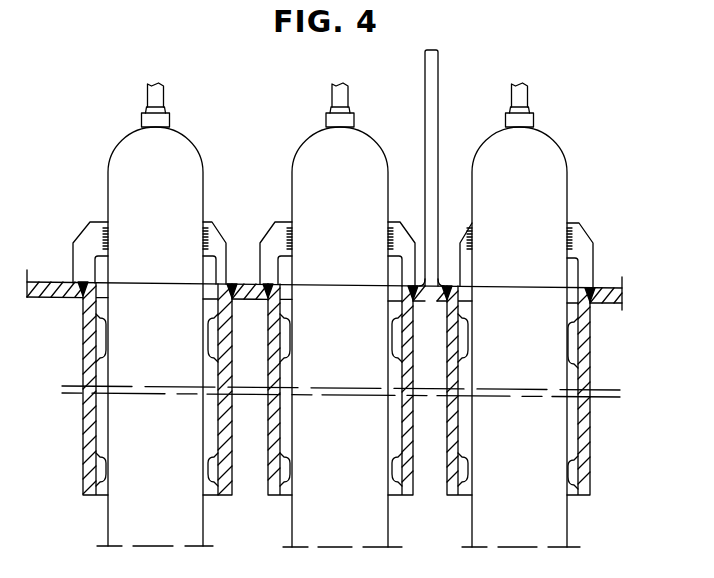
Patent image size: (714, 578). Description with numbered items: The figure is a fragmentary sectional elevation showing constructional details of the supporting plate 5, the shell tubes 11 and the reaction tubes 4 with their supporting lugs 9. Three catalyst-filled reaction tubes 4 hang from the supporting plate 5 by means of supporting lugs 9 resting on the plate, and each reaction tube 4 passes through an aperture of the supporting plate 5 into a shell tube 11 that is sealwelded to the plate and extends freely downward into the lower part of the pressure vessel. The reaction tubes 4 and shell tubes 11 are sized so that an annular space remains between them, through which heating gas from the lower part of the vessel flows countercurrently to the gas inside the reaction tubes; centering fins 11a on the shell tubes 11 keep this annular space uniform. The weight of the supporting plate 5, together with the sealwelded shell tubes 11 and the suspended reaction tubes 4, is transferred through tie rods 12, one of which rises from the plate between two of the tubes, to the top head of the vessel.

The reaction tubes 4 is at (122, 528).
The supporting plate 5 is at (59, 290).
The supporting lugs 9 is at (580, 245).
The shell tubes 11 is at (87, 474).
The centering fins 11a is at (572, 343).
The tie rods 12 is at (430, 95).